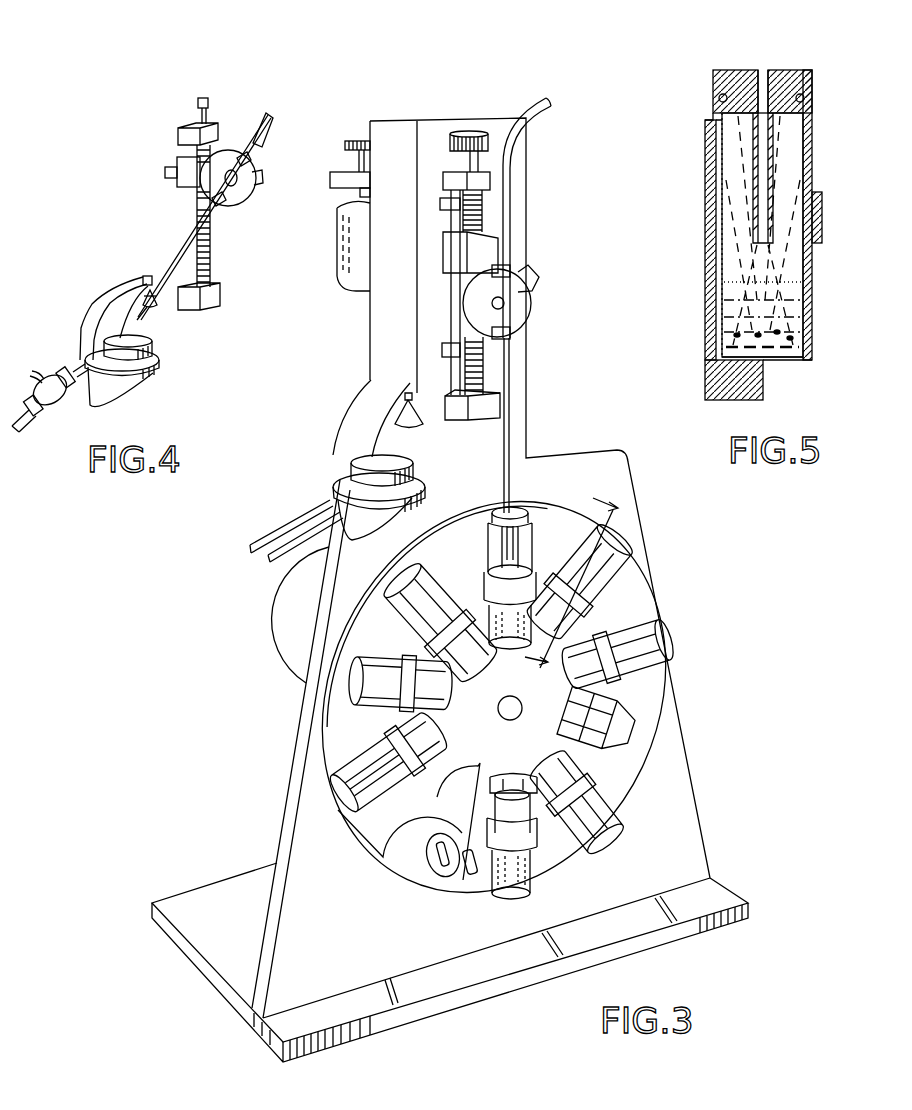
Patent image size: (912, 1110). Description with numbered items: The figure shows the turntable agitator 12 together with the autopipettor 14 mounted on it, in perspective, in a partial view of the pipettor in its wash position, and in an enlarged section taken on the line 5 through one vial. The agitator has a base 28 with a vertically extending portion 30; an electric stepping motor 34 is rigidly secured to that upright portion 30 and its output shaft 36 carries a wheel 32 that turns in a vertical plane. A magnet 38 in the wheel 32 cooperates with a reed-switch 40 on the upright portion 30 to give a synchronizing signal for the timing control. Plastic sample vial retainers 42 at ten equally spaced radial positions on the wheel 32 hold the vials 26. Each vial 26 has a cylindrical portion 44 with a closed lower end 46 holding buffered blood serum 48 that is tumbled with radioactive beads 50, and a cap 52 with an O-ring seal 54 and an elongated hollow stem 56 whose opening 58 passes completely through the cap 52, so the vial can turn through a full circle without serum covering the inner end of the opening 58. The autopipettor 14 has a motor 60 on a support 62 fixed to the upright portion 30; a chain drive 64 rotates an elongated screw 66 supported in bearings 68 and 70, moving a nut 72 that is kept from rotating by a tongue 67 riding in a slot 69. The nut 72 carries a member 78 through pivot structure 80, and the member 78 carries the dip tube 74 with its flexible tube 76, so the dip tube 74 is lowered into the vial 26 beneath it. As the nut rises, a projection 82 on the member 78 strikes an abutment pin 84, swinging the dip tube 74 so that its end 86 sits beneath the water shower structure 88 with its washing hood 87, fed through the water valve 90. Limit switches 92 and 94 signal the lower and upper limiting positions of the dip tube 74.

In FIG. 3, the section line 5— 5 is at (565, 573).
In FIG. 3, the turntable agitator 12 is at (208, 766).
In FIG. 3, the autopipettor 14 is at (512, 215).
In FIG. 5, the vial 26 is at (705, 255).
In FIG. 3, the base 28 is at (742, 892).
In FIG. 3, the vertically extending portion 30 is at (700, 800).
In FIG. 3, the wheel 32 is at (662, 695).
In FIG. 3, the electric stepping motor 34 is at (272, 663).
In FIG. 3, the output shaft 36 is at (512, 698).
In FIG. 3, the magnet 38 is at (480, 880).
In FIG. 3, the reed-switch 40 is at (432, 868).
In FIG. 3, the sample vial retainer 42 is at (472, 580).
In FIG. 5, the sample vial retainer 42 is at (729, 235).
In FIG. 5, the cylindrical portion 44 is at (813, 162).
In FIG. 5, the closed lower end 46 is at (787, 361).
In FIG. 5, the buffered blood serum 48 is at (805, 303).
In FIG. 5, the radioactive beads 50 is at (792, 338).
In FIG. 5, the cap 52 is at (718, 70).
In FIG. 5, the O-ring seal 54 is at (720, 98).
In FIG. 5, the elongated hollow stem 56 is at (753, 165).
In FIG. 5, the opening 58 is at (786, 70).
In FIG. 3, the motor 60 is at (337, 240).
In FIG. 3, the support 62 is at (329, 181).
In FIG. 3, the chain drive 64 is at (358, 140).
In FIG. 3, the elongated screw 66 is at (484, 375).
In FIG. 4, the tongue 67 is at (172, 155).
In FIG. 3, the bearing 68 is at (490, 182).
In FIG. 3, the slot 69 is at (451, 283).
In FIG. 3, the bearing 70 is at (500, 402).
In FIG. 3, the nut 72 is at (443, 250).
In FIG. 3, the dip tube 74 is at (510, 358).
In FIG. 3, the flexible tube 76 is at (540, 102).
In FIG. 3, the member 78 is at (499, 279).
In FIG. 3, the pivot structure 80 is at (492, 303).
In FIG. 3, the projection 82 is at (535, 276).
In FIG. 3, the abutment pin 84 is at (515, 268).
In FIG. 4, the end of the dip tube 86 is at (151, 308).
In FIG. 3, the washing hood 87 is at (415, 422).
In FIG. 4, the washing hood 87 is at (159, 300).
In FIG. 4, the water shower structure 88 is at (108, 290).
In FIG. 4, the water valve 90 is at (57, 374).
In FIG. 3, the limit switch 92 is at (440, 203).
In FIG. 3, the limit switch 94 is at (442, 348).